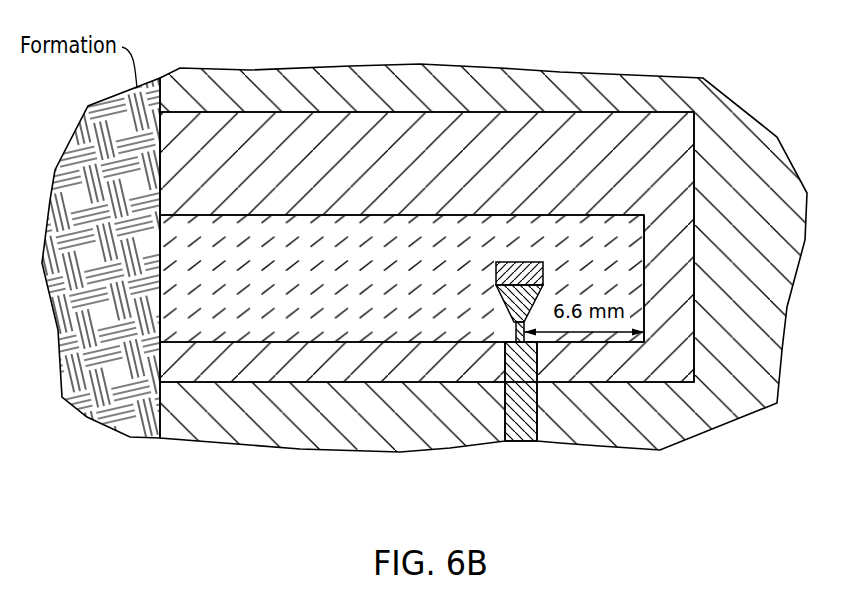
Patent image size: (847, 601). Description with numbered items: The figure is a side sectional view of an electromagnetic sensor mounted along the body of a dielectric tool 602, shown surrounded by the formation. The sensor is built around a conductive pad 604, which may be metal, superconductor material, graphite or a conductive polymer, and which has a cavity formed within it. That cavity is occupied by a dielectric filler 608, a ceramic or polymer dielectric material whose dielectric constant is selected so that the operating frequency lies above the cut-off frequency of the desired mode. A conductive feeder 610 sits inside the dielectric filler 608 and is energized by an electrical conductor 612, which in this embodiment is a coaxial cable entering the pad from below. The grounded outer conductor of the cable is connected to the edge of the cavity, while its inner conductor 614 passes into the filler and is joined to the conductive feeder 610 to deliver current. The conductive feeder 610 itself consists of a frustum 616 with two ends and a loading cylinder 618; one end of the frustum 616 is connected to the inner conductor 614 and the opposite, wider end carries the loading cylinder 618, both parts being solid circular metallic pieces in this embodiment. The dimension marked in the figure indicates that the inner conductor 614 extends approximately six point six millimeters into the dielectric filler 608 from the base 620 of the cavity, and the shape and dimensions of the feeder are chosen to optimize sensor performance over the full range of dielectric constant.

The dielectric tool 602 is at (688, 418).
The conductive pad 604 is at (295, 148).
The dielectric filler 608 is at (222, 316).
The conductive feeder 610 is at (498, 243).
The electrical conductor 612 is at (518, 417).
The inner conductor 614 is at (517, 333).
The frustum 616 is at (513, 305).
The loading cylinder 618 is at (522, 262).
The base of cavity 620 is at (623, 245).